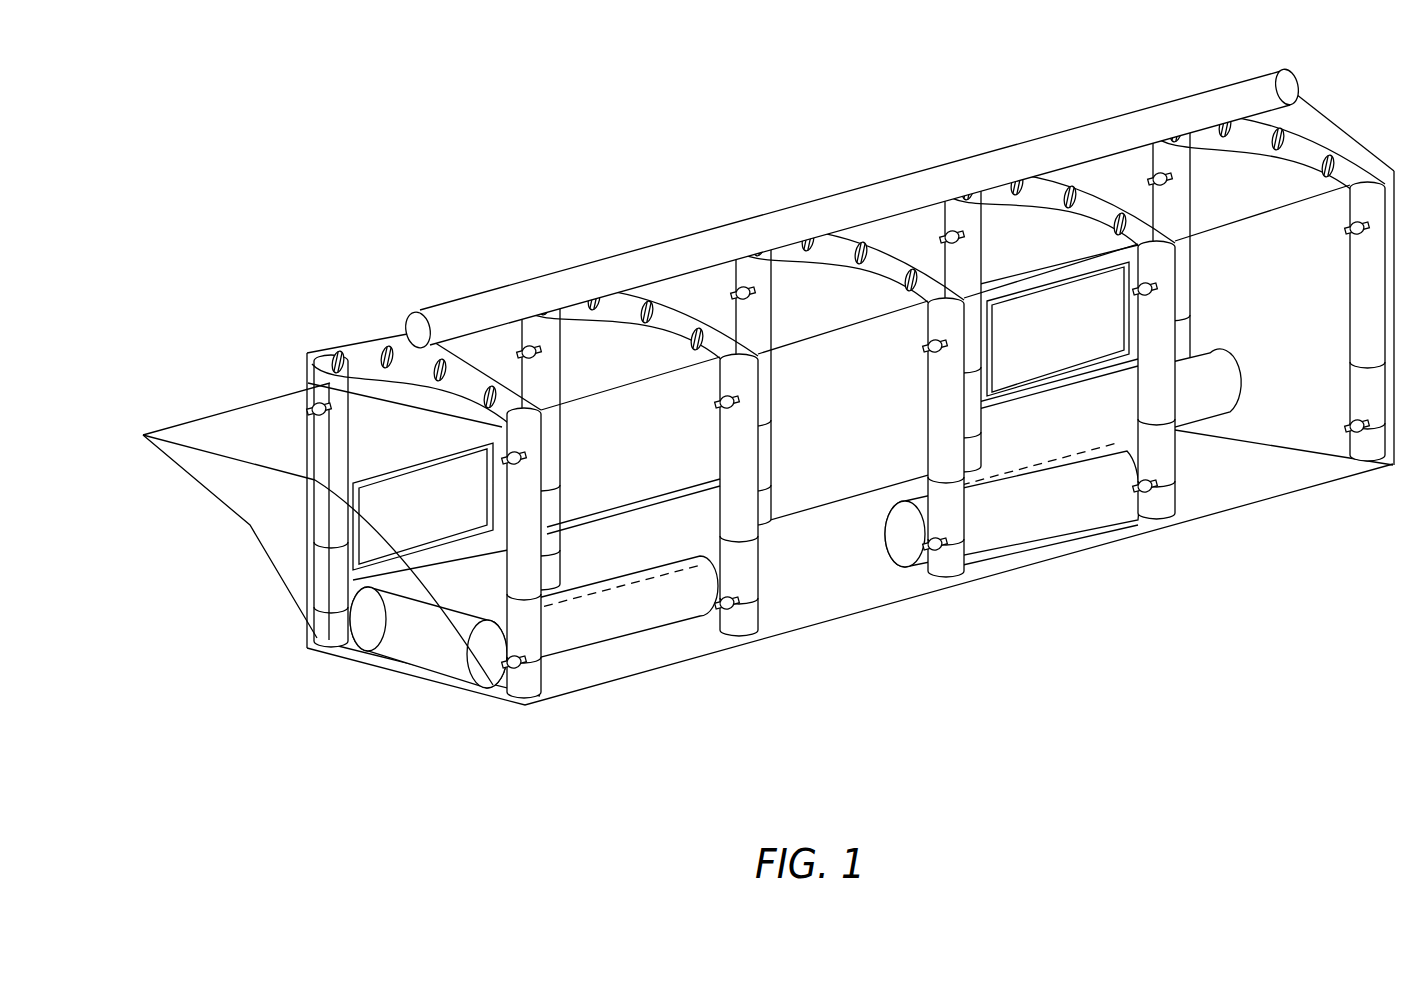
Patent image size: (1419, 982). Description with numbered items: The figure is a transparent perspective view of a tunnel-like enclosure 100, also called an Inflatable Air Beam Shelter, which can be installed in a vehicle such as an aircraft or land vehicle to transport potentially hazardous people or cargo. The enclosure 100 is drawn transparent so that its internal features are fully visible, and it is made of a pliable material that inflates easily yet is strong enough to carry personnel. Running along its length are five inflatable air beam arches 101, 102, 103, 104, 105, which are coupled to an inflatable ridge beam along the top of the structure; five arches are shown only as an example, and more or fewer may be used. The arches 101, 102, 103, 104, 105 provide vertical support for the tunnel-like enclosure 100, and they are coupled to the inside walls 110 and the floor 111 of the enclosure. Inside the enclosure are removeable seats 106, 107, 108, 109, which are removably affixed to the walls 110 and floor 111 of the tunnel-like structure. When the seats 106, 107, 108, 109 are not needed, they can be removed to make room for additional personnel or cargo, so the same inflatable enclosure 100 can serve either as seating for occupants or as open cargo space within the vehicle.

The tunnel-like enclosure 100 is at (768, 400).
The inflatable air beam arch 101 is at (365, 355).
The inflatable air beam arch 102 is at (625, 300).
The inflatable air beam arch 103 is at (835, 245).
The inflatable air beam arch 104 is at (1045, 185).
The inflatable air beam arch 105 is at (1252, 125).
The removeable seat 106 is at (392, 608).
The removeable seat 107 is at (603, 627).
The removeable seat 108 is at (1032, 510).
The removeable seat 109 is at (1217, 385).
The inside walls 110 is at (828, 440).
The floor 111 is at (782, 603).